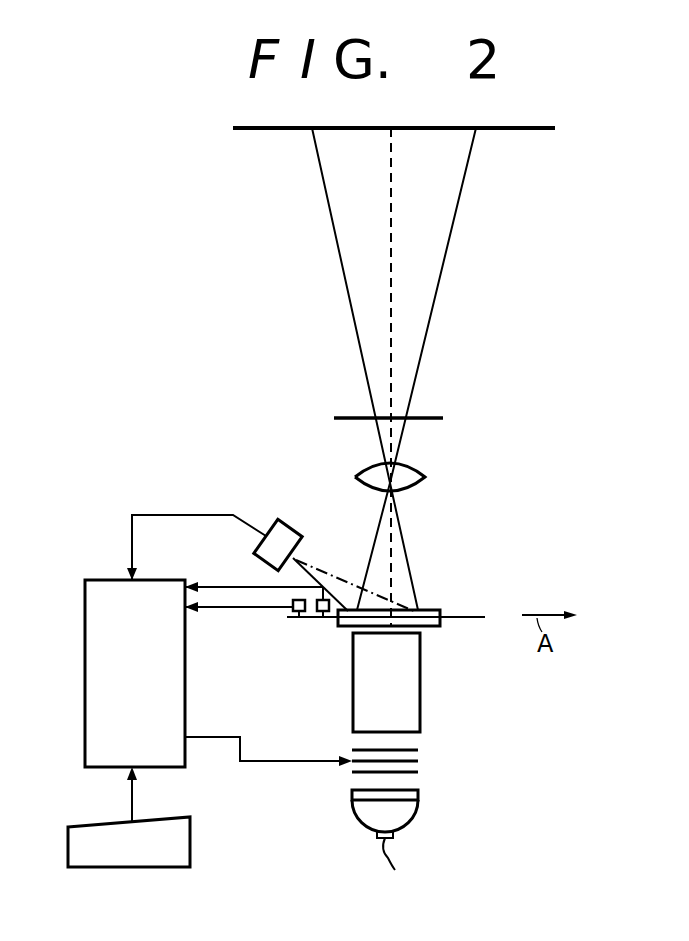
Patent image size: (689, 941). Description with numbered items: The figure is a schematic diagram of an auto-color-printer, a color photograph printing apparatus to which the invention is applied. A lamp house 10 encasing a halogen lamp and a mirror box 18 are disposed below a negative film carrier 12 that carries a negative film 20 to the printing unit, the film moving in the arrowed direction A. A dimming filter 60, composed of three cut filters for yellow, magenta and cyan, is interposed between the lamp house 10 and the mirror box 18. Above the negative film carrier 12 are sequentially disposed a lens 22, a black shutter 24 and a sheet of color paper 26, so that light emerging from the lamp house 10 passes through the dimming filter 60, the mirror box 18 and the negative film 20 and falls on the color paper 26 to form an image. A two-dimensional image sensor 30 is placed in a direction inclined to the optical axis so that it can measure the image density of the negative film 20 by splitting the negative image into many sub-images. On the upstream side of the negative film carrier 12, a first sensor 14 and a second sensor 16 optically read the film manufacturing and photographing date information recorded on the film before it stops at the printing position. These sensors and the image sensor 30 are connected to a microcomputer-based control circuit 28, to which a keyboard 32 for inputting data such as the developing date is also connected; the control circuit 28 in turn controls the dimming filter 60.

The lamp house 10 is at (418, 815).
The negative film carrier 12 is at (440, 622).
The first sensor 14 is at (297, 617).
The second sensor 16 is at (323, 617).
The mirror box 18 is at (420, 700).
The negative film 20 is at (432, 610).
The lens 22 is at (410, 480).
The black shutter 24 is at (435, 418).
The color paper 26 is at (497, 131).
The control circuit 28 is at (85, 697).
The two-dimensional image sensor 30 is at (290, 520).
The keyboard 32 is at (128, 868).
The dimming filter 60 is at (422, 763).